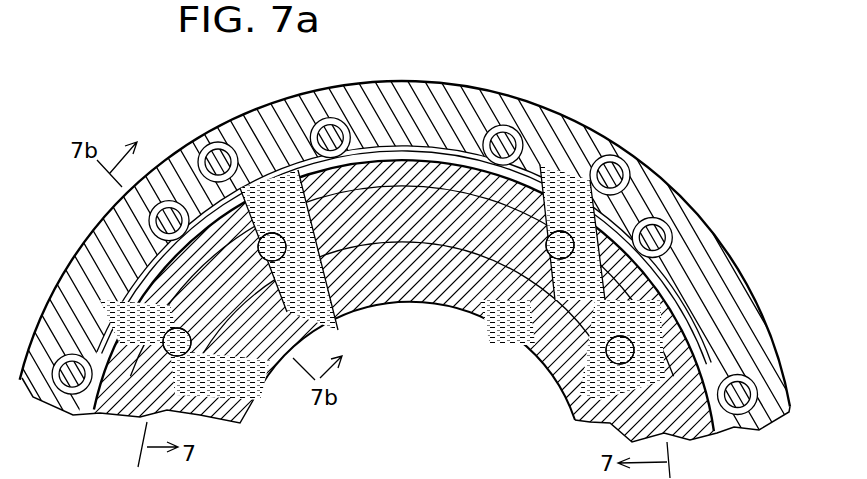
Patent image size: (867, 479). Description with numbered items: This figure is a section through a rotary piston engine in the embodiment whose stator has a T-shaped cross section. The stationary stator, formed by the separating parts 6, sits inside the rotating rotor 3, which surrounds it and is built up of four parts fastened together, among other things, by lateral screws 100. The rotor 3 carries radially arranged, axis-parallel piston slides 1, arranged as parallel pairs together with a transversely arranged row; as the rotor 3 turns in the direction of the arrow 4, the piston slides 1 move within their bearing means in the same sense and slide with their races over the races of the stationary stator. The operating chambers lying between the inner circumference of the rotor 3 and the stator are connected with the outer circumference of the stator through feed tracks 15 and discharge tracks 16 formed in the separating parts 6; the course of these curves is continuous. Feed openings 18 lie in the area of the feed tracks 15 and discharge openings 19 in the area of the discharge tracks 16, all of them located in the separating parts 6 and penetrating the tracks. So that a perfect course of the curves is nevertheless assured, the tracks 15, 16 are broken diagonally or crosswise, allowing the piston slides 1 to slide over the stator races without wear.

The piston slides 1 is at (183, 216).
The rotor 3 is at (220, 143).
The arrow 4 is at (448, 118).
The separating parts 6 is at (399, 298).
The feed tracks 15 is at (281, 195).
The discharge tracks 16 is at (567, 196).
The feed openings 18 is at (320, 323).
The discharge openings 19 is at (479, 310).
The lateral screws 100 is at (214, 143).